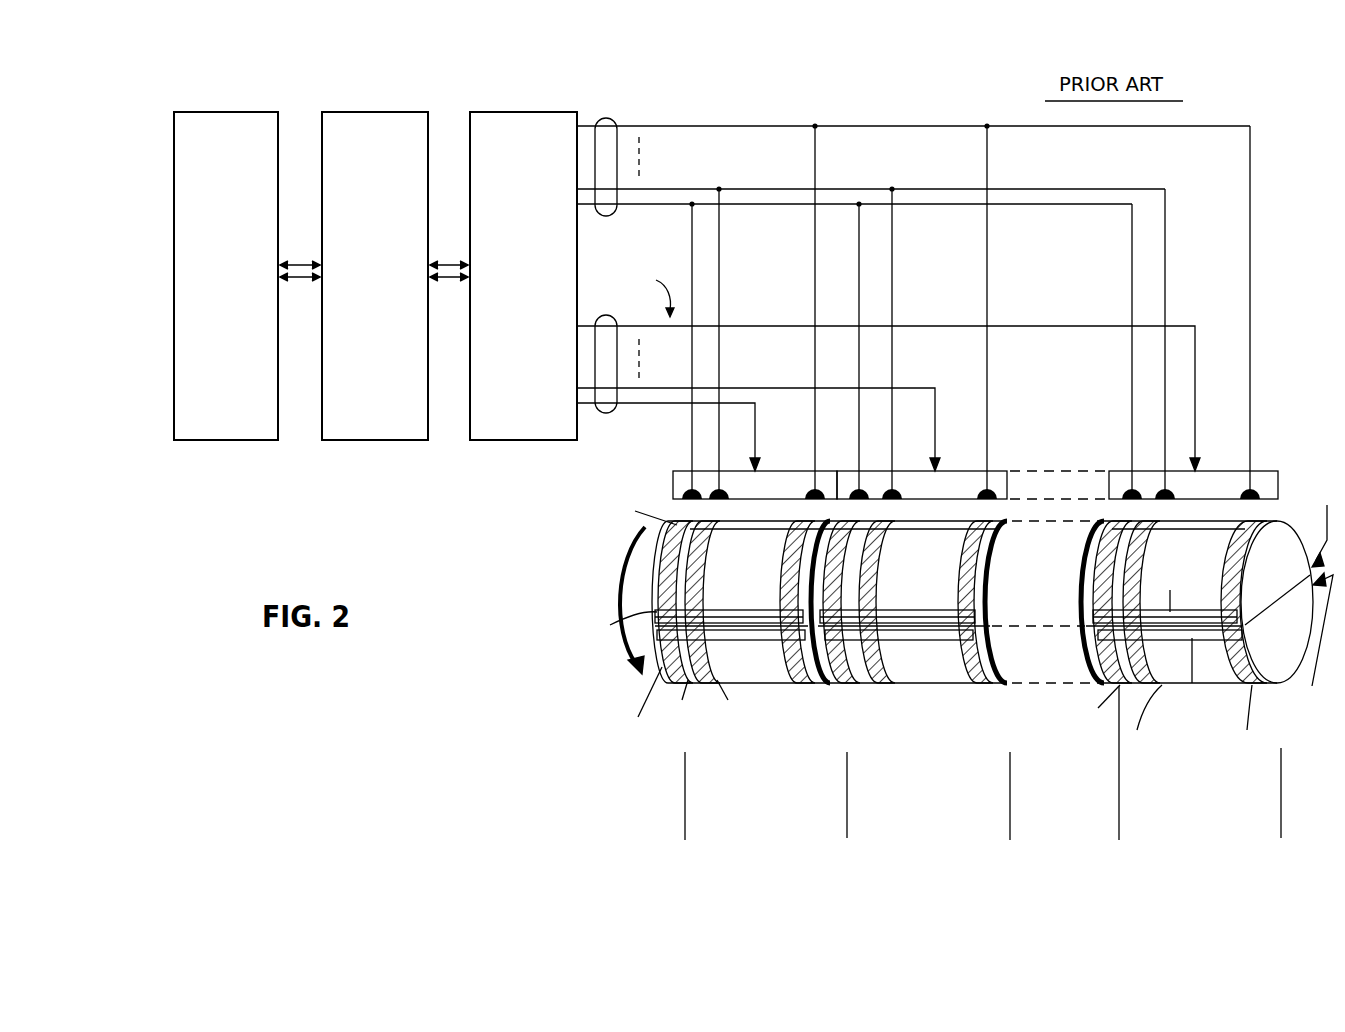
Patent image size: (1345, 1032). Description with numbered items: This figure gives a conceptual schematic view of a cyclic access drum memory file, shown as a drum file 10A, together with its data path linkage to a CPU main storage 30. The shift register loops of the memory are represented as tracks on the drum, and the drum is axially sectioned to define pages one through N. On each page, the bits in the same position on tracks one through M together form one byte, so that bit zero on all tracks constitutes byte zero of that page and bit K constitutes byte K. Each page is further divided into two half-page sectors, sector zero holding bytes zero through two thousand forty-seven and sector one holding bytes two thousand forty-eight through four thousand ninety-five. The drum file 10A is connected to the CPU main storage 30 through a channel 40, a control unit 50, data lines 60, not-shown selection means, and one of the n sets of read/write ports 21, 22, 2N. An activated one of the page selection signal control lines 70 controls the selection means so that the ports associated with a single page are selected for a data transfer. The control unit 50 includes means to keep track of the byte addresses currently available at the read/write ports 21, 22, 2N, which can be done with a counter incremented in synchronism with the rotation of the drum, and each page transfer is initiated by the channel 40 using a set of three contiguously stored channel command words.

The CPU main storage 30 is at (213, 432).
The channel 40 is at (367, 432).
The control unit 50 is at (514, 435).
The data lines 60 is at (603, 117).
The page selection signal control lines 70 is at (611, 413).
The read/write port set 21 is at (775, 478).
The read/write port set 22 is at (950, 477).
The read/write port set 2N is at (1211, 478).
The drum file 10A is at (576, 568).